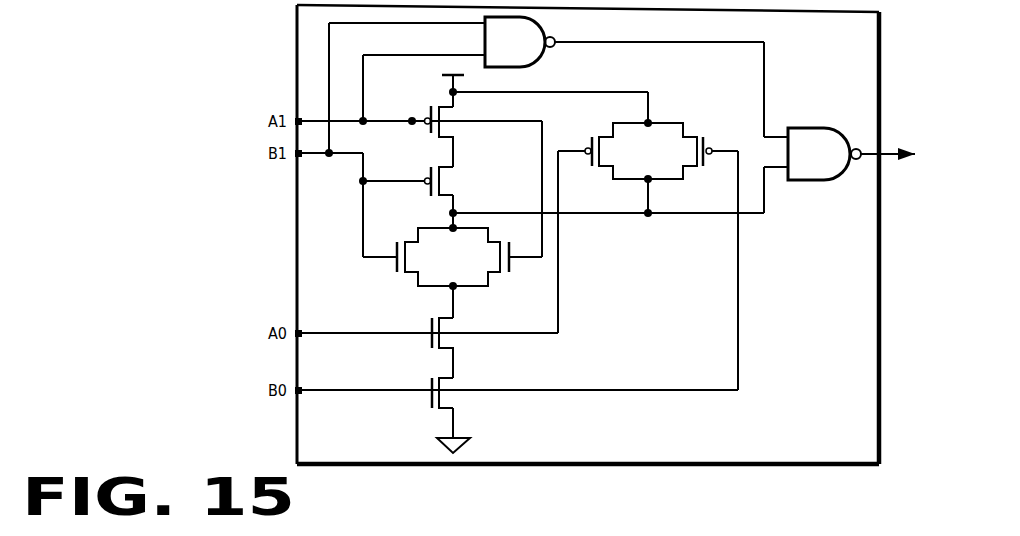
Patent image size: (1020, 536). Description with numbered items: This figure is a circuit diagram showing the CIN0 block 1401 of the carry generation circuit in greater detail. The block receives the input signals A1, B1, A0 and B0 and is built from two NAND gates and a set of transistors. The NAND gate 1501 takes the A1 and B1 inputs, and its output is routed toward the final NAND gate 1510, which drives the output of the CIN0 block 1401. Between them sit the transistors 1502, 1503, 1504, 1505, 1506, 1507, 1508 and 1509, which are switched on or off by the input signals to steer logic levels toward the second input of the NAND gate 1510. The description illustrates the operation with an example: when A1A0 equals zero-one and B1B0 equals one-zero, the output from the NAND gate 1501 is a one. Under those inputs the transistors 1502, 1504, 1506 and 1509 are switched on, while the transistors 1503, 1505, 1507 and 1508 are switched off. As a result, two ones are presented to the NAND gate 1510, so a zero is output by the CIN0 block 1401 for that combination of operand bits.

The CIN0 block 1401 is at (860, 45).
The NAND gate 1501 is at (529, 53).
The transistor 1502 is at (498, 118).
The transistor 1503 is at (480, 191).
The transistor 1504 is at (445, 266).
The transistor 1505 is at (497, 266).
The transistor 1506 is at (495, 331).
The transistor 1507 is at (495, 390).
The transistor 1508 is at (638, 163).
The transistor 1509 is at (691, 163).
The NAND gate 1510 is at (831, 165).